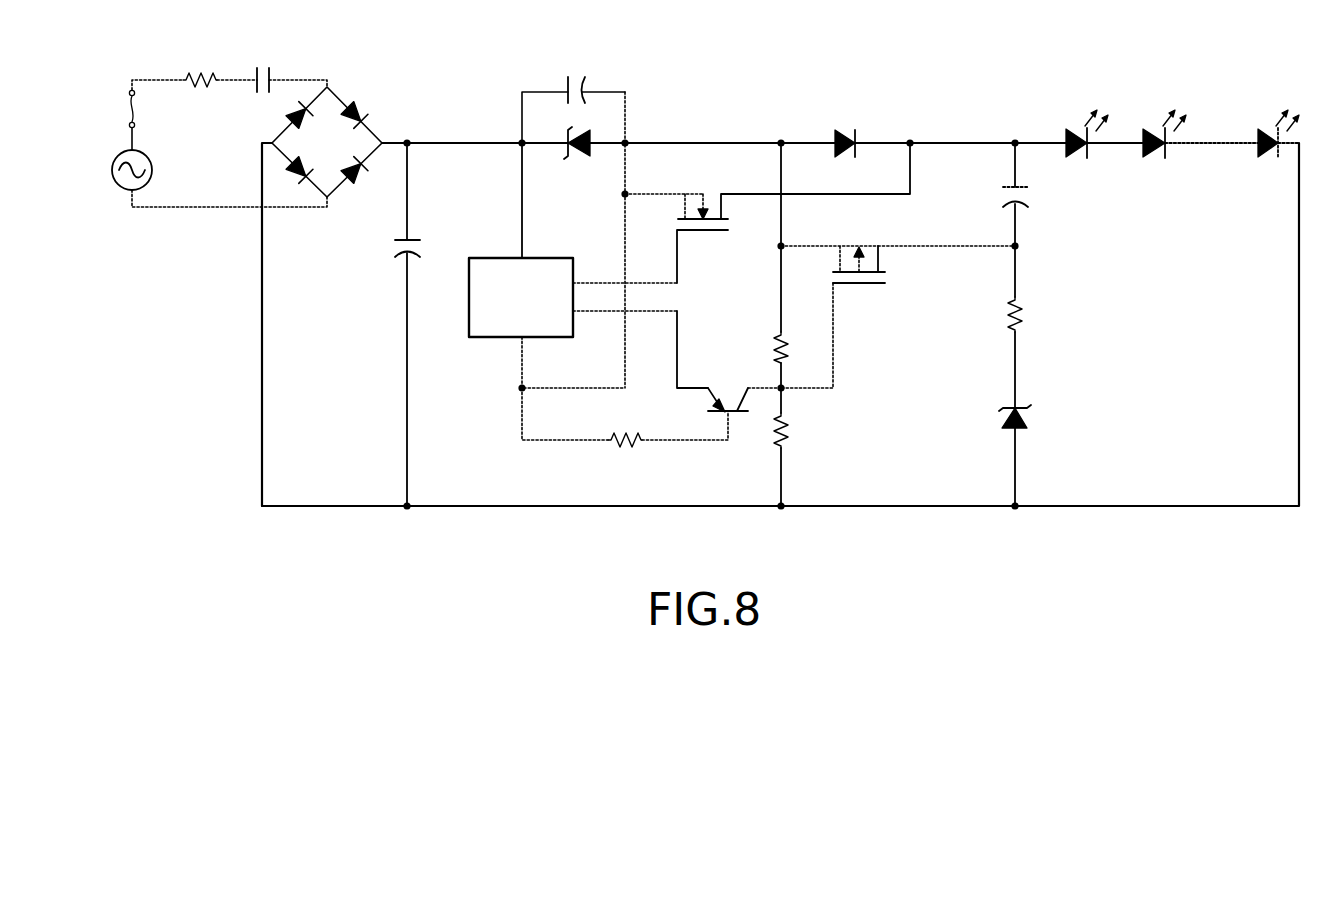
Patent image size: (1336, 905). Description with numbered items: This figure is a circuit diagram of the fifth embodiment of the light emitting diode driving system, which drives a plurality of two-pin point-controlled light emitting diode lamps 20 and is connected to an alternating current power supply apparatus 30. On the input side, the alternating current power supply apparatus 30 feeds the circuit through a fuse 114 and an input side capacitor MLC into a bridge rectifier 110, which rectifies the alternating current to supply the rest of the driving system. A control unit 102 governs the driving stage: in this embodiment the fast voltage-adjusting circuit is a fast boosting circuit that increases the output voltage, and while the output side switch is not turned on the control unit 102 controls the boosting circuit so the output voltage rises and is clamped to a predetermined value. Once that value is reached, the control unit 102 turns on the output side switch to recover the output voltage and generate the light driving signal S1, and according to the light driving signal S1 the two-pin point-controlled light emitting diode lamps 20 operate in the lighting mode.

The alternating current power supply apparatus 30 is at (205, 178).
The fuse 114 is at (156, 115).
The input side capacitor MLC is at (255, 68).
The bridge rectifier 110 is at (334, 296).
The control unit 102 is at (511, 258).
The light driving signal S1 is at (1047, 138).
The two-pin point-controlled light emitting diode lamps 20 is at (1275, 101).